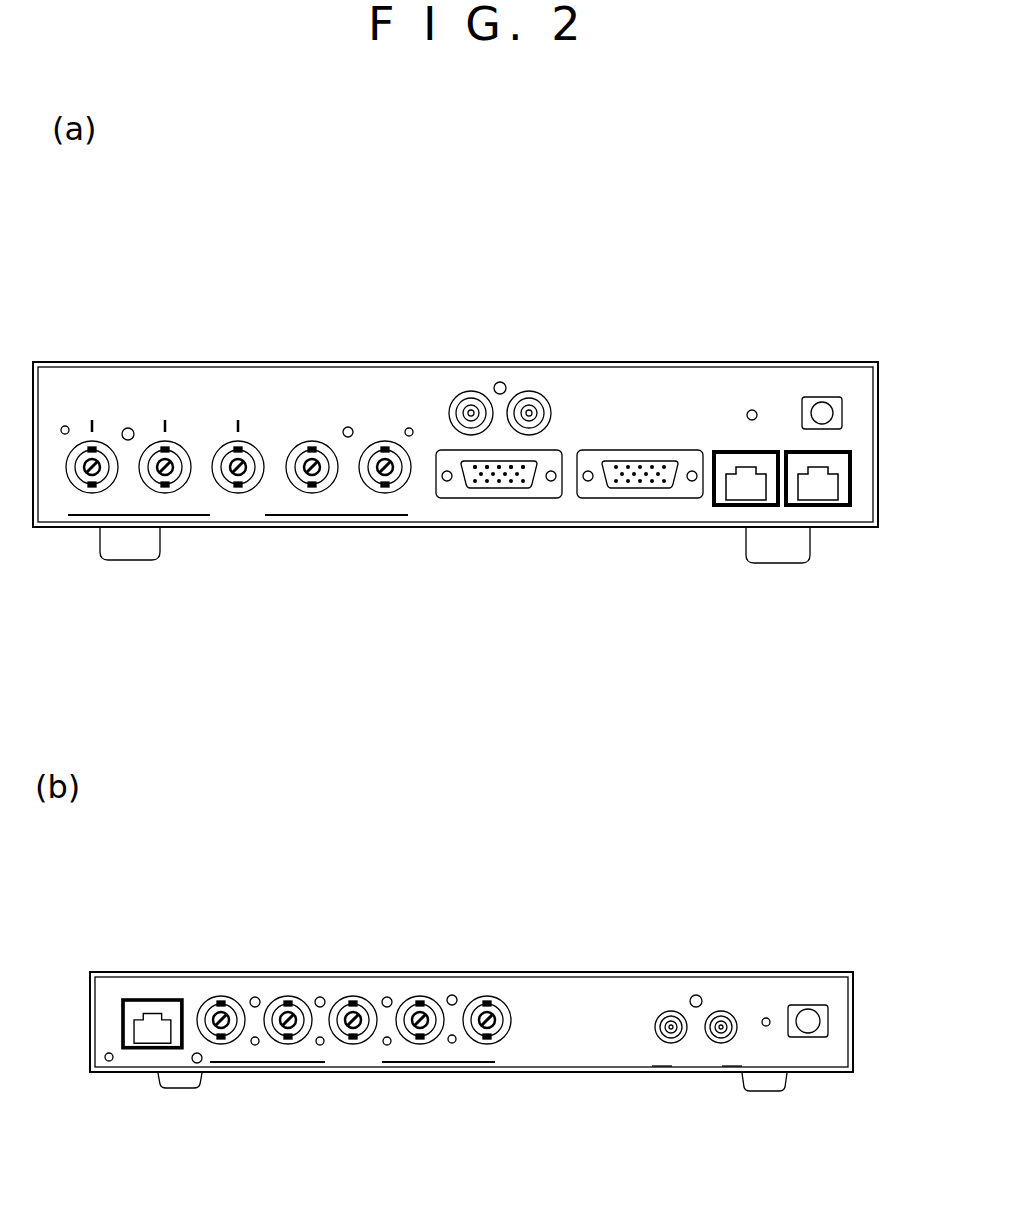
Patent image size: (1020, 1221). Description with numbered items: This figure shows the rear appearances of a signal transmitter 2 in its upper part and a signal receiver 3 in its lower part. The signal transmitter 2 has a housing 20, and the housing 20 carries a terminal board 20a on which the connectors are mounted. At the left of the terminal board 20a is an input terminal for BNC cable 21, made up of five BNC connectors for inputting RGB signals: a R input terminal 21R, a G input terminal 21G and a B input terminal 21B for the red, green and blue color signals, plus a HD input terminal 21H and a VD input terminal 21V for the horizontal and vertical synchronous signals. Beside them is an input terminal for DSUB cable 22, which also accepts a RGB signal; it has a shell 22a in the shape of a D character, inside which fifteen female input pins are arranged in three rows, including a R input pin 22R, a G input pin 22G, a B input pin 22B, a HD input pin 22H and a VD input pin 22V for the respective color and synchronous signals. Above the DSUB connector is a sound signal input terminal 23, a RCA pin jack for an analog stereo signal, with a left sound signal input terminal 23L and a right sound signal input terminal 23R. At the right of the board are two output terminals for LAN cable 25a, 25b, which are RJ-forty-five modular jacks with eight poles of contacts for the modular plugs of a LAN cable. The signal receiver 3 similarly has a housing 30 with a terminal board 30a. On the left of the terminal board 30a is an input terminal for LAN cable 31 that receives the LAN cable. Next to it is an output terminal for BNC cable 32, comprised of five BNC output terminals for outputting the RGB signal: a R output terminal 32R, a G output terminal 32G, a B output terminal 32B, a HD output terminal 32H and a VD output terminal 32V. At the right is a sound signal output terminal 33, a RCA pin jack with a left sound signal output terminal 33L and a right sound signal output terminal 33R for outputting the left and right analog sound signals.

The signal transmitter 2 is at (440, 235).
The housing 20 is at (420, 362).
The terminal board 20a is at (72, 378).
The input terminal for BNC cable 21 is at (402, 308).
The R input terminal 21R is at (108, 440).
The G input terminal 21G is at (182, 442).
The B input terminal 21B is at (258, 442).
The HD input terminal 21H is at (312, 440).
The VD input terminal 21V is at (385, 440).
The input terminal for DSUB cable 22 is at (685, 597).
The shell 22a is at (463, 483).
The VD input pin 22V is at (477, 485).
The HD input pin 22H is at (493, 485).
The B input pin 22B is at (505, 485).
The G input pin 22G is at (525, 485).
The R input pin 22R is at (543, 485).
The sound signal input terminal 23 is at (573, 310).
The left sound signal input terminal 23L is at (470, 391).
The right sound signal input terminal 23R is at (529, 391).
The output terminal for LAN cable 25a is at (736, 507).
The output terminal for LAN cable 25b is at (818, 507).
The signal receiver 3 is at (440, 836).
The housing 30 is at (565, 972).
The terminal board 30a is at (117, 988).
The input terminal for LAN cable 31 is at (167, 1000).
The output terminal for BNC cable 32 is at (535, 930).
The R output terminal 32R is at (241, 997).
The G output terminal 32G is at (306, 997).
The B output terminal 32B is at (372, 997).
The HD output terminal 32H is at (420, 999).
The VD output terminal 32V is at (481, 999).
The sound signal output terminal 33 is at (755, 930).
The left sound signal output terminal 33L is at (671, 1010).
The right sound signal output terminal 33R is at (723, 1010).